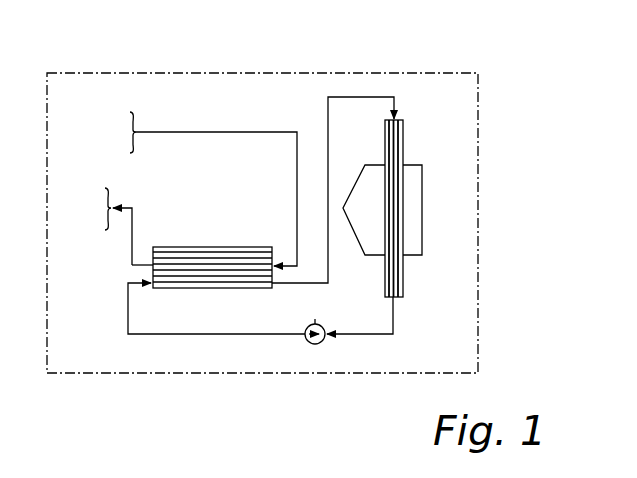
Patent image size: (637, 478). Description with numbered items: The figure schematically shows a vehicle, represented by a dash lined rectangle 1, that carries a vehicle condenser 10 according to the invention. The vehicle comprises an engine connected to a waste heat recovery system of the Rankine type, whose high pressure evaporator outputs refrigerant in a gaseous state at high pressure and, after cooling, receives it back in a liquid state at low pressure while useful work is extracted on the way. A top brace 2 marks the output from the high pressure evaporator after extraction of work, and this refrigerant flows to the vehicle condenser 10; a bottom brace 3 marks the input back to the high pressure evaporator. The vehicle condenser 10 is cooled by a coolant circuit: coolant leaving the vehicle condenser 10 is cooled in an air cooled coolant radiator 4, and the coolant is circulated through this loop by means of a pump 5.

The dash lined rectangle 1 is at (480, 249).
The top brace 2 is at (122, 132).
The bottom brace 3 is at (97, 209).
The air cooled coolant radiator 4 is at (403, 148).
The pump 5 is at (323, 325).
The vehicle condenser 10 is at (200, 247).